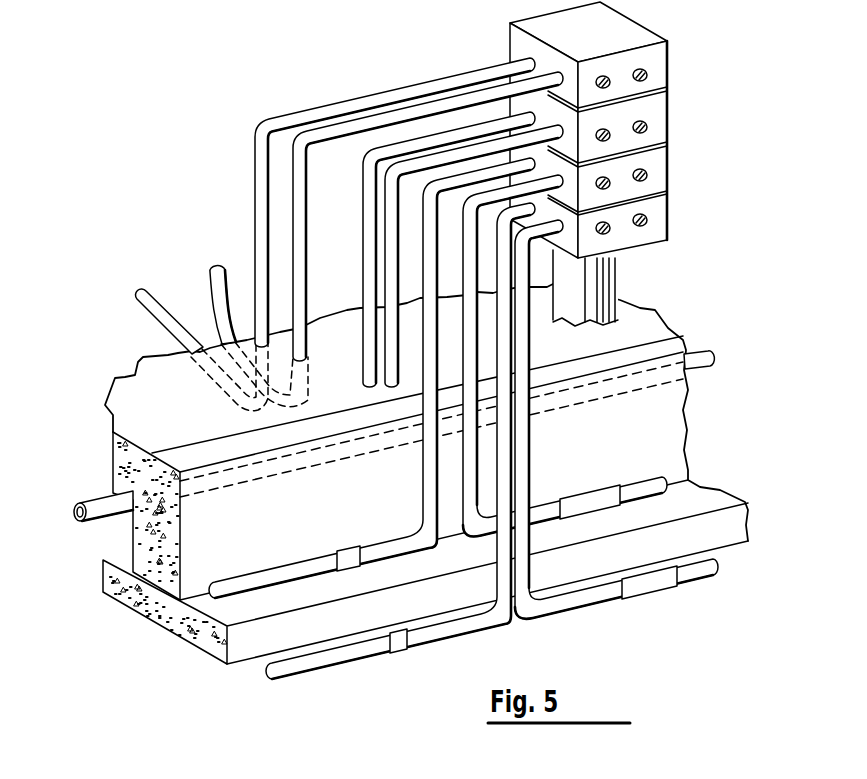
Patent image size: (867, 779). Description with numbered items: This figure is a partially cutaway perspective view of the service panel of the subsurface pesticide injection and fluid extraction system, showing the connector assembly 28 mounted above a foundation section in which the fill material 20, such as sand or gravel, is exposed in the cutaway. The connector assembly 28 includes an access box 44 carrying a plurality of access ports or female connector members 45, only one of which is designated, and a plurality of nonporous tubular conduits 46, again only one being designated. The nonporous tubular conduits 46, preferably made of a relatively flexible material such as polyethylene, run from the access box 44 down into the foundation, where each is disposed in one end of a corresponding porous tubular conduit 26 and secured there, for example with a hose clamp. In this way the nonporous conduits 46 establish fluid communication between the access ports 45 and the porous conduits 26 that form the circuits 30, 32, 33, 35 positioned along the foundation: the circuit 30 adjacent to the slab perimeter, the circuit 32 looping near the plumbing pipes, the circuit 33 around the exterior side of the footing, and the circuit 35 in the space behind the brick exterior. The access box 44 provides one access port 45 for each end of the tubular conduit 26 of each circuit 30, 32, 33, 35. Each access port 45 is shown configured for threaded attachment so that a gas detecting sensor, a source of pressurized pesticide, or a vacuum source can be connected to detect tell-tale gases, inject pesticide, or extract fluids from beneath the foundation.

The fill material 20 is at (124, 387).
The tubular conduit 26 is at (97, 495).
The connector assembly 28 is at (651, 149).
The circuit 30 is at (93, 523).
The circuit 32 is at (210, 283).
The circuit 33 is at (460, 633).
The circuit 35 is at (338, 573).
The access box 44 is at (668, 178).
The access port 45 is at (643, 228).
The nonporous tubular conduit 46 is at (300, 110).